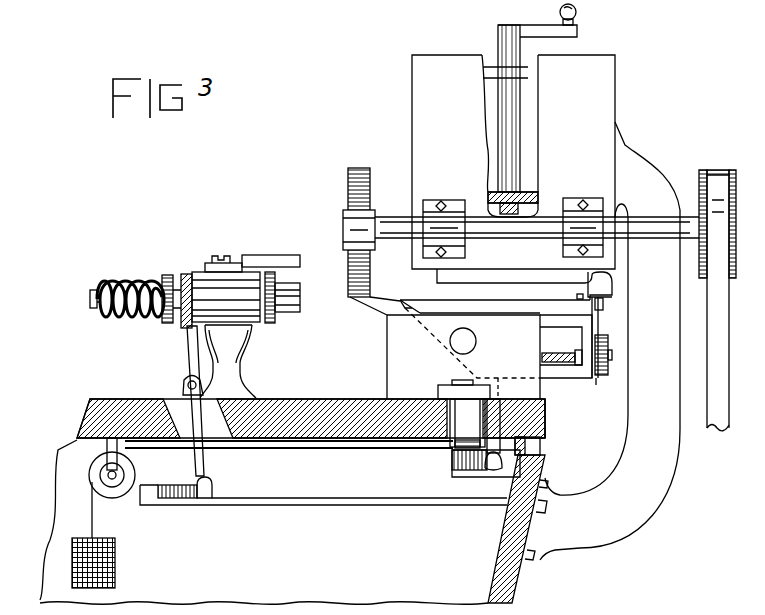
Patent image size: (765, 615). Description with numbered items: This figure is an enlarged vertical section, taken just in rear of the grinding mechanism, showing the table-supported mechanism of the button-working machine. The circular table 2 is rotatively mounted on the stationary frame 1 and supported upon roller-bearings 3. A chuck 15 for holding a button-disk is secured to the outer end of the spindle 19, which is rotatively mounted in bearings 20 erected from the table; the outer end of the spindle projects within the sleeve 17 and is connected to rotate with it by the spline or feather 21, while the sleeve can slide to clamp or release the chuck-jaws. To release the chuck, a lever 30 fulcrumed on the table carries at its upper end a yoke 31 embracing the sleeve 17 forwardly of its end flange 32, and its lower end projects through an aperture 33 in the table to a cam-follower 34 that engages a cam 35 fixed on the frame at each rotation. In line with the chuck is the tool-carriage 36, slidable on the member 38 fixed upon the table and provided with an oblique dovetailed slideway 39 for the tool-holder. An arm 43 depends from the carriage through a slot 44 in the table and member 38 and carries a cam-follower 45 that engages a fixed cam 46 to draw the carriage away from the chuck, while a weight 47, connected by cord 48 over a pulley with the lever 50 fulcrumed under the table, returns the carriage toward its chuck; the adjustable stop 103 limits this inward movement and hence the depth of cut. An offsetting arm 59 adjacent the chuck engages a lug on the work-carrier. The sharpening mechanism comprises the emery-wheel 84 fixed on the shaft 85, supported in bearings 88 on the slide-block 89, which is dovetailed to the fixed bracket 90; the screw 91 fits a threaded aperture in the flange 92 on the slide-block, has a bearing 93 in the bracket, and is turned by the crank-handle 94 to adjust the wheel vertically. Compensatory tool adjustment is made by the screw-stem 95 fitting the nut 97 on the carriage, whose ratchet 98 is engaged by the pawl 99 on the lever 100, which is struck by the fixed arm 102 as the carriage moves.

The stationary frame 1 is at (512, 592).
The circular table 2 is at (82, 418).
The roller-bearings 3 is at (545, 445).
The chuck 15 is at (300, 306).
The sleeve 17 is at (272, 325).
The spindle 19 is at (90, 298).
The bearings 20 is at (196, 274).
The spline or feather 21 is at (112, 283).
The lever 30 is at (186, 366).
The yoke 31 is at (181, 325).
The end flange 32 is at (166, 322).
The aperture 33 is at (173, 423).
The cam-follower 34 is at (214, 486).
The cam 35 is at (185, 486).
The tool-carriage 36 is at (511, 306).
The member 38 is at (398, 343).
The dovetailed slideway 39 is at (404, 303).
The arm 43 is at (547, 416).
The slot 44 is at (452, 398).
The cam-follower 45 is at (490, 472).
The cam 46 is at (458, 468).
The weight 47 is at (108, 552).
The cord 48 is at (305, 449).
The lever 50 is at (456, 449).
The offsetting arm 59 is at (248, 256).
The emery-wheel 84 is at (347, 184).
The shaft 85 is at (520, 236).
The bearings 88 is at (436, 201).
The slide-block 89 is at (595, 95).
The fixed bracket 90 is at (500, 72).
The screw 91 is at (520, 175).
The flange 92 is at (490, 196).
The bearing 93 is at (520, 82).
The crank-handle 94 is at (577, 11).
The screw-stem 95 is at (550, 356).
The nut 97 is at (596, 380).
The ratchet 98 is at (608, 366).
The pawl 99 is at (600, 336).
The lever 100 is at (605, 304).
The fixed arm 102 is at (606, 290).
The adjustable stop 103 is at (575, 297).